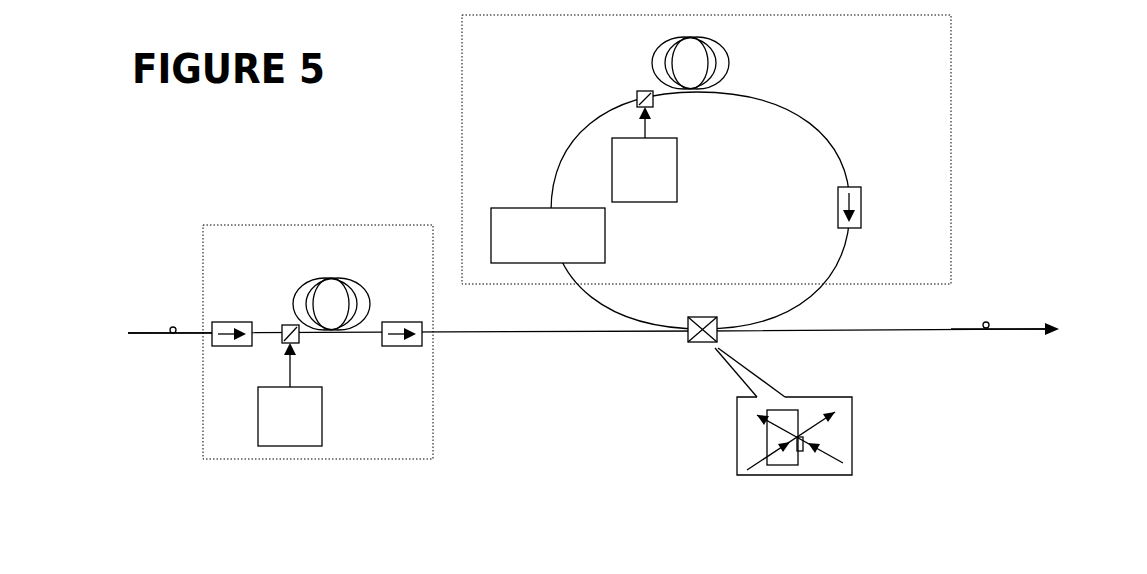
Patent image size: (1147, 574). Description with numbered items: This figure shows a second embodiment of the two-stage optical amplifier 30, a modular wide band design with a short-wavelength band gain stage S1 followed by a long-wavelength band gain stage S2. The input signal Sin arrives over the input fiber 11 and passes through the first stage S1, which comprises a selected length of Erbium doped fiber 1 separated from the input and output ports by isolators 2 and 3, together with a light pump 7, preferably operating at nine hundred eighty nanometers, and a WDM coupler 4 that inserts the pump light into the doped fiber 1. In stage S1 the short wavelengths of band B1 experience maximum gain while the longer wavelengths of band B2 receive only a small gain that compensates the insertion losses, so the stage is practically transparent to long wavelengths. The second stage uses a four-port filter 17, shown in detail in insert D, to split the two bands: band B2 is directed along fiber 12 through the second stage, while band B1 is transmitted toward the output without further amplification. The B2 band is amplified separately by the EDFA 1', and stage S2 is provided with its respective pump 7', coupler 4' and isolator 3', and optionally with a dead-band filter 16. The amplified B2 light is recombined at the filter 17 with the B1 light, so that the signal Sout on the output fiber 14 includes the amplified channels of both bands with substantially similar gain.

The two-stage optical amplifier 30 is at (408, 173).
The short-wavelength band gain stage S1 is at (203, 277).
The long-wavelength band gain stage S2 is at (951, 142).
The input fiber 11 is at (165, 334).
The isolator 2 is at (222, 322).
The WDM coupler 4 is at (275, 332).
The Erbium doped fiber 1 is at (328, 284).
The isolator 3 is at (399, 303).
The light pump 7 is at (313, 411).
The fiber 12 is at (780, 104).
The EDFA 1' is at (726, 60).
The coupler 4' is at (626, 89).
The pump 7' is at (669, 188).
The dead-band filter 16 is at (527, 208).
The isolator 3' is at (874, 237).
The four-port filter 17 is at (686, 338).
The insert D is at (853, 413).
The output fiber 14 is at (1024, 323).